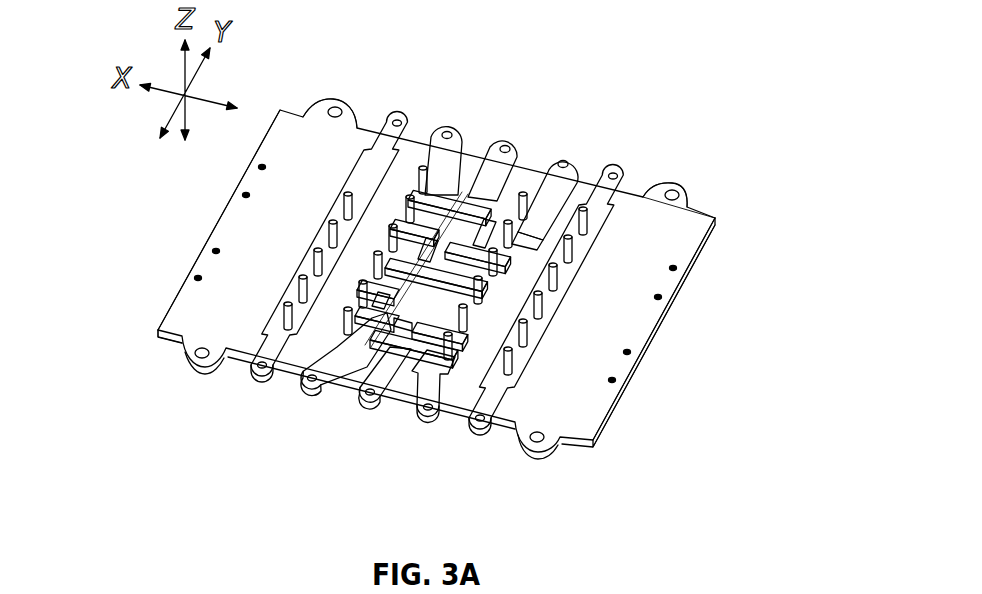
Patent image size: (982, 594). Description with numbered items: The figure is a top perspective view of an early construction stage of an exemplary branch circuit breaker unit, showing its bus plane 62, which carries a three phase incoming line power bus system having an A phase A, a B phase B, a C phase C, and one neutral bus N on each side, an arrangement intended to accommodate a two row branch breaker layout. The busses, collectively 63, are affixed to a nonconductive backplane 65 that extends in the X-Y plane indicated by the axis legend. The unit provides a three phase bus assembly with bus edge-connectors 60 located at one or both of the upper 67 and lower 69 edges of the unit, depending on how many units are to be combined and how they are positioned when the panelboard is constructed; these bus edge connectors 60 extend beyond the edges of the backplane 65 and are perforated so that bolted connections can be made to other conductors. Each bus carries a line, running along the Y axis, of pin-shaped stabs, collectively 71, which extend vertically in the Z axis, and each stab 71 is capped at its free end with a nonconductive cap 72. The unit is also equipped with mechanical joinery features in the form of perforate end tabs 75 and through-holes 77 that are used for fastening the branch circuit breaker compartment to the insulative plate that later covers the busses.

The bus edge-connectors 60 is at (620, 150).
The bus plane 62 is at (708, 296).
The busses 63 is at (620, 237).
The backplane 65 is at (286, 191).
The upper edge 67 is at (303, 117).
The lower edge 69 is at (166, 338).
The stabs 71 is at (540, 304).
The nonconductive cap 72 is at (317, 240).
The perforate end tabs 75 is at (674, 190).
The through-holes 77 is at (617, 379).
The neutral bus N is at (257, 393).
The C phase C is at (308, 402).
The B phase B is at (367, 417).
The A phase A is at (425, 434).